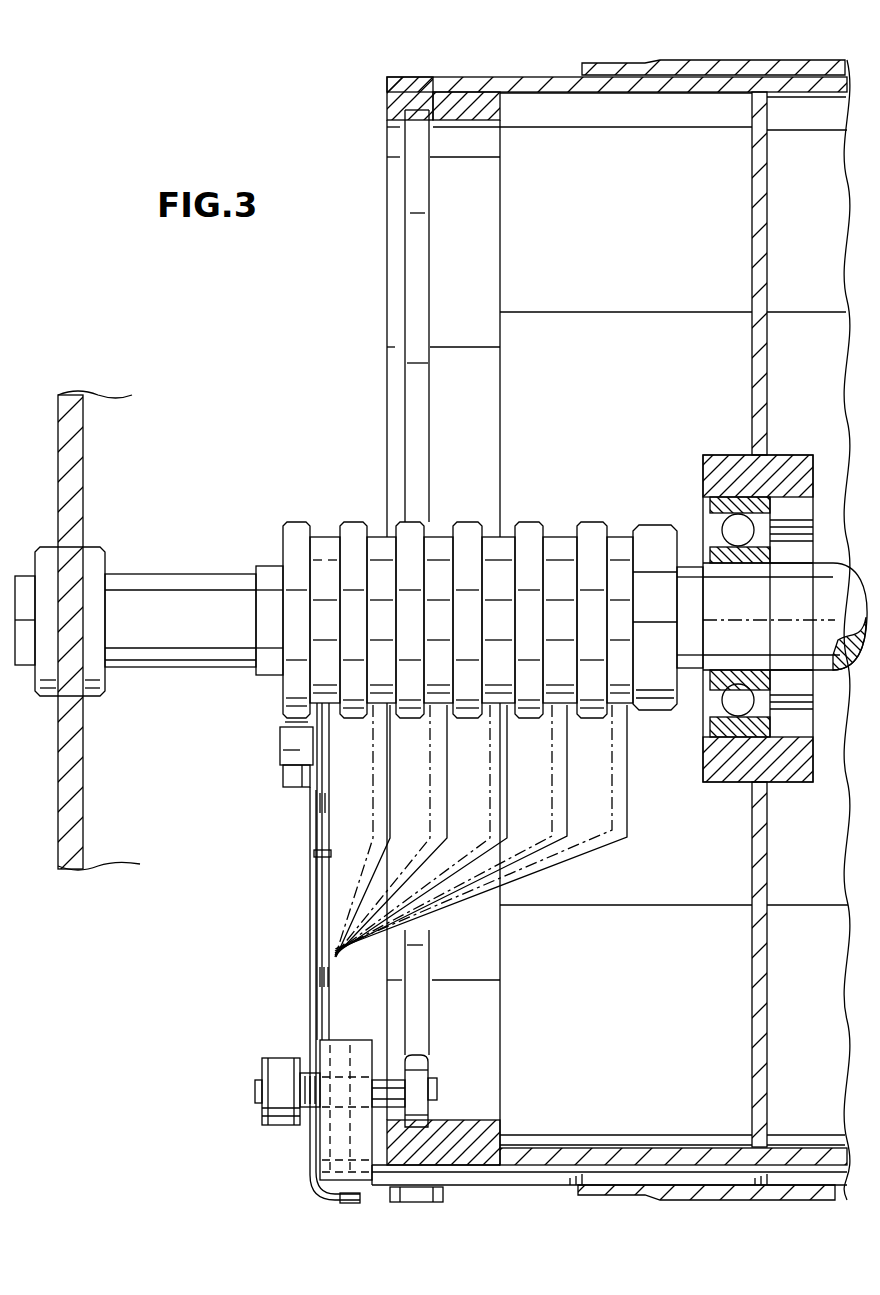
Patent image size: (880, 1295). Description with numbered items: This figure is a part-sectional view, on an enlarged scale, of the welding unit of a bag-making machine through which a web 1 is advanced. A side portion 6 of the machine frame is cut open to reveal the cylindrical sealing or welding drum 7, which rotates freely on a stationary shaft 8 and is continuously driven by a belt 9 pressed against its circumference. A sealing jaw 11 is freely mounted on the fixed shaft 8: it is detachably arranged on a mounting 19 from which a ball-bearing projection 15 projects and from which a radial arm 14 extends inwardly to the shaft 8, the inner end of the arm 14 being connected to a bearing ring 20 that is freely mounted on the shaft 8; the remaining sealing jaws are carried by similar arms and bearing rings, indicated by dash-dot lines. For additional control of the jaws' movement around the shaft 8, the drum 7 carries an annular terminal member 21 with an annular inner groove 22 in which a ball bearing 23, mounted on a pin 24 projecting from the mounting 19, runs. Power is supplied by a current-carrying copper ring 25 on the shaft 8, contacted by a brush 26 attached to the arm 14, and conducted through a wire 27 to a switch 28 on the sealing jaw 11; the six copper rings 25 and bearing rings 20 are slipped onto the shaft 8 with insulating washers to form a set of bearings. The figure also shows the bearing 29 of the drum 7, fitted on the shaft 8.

The web 1 is at (745, 75).
The side portion 6 is at (75, 788).
The sealing or welding drum 7 is at (538, 76).
The stationary shaft 8 is at (186, 590).
The belt 9 is at (620, 67).
The sealing jaw 11 is at (503, 1187).
The radial arm 14 is at (330, 790).
The ball-bearing projection 15 is at (275, 1058).
The mounting 19 is at (352, 1047).
The bearing ring 20 is at (325, 540).
The annular terminal member 21 is at (500, 1041).
The annular inner groove 22 is at (418, 965).
The ball bearing 23 is at (415, 1055).
The pin 24 is at (437, 1088).
The copper ring 25 is at (297, 522).
The brush 26 is at (280, 730).
The wire 27 is at (310, 920).
The switch 28 is at (415, 1205).
The bearing 29 is at (703, 510).